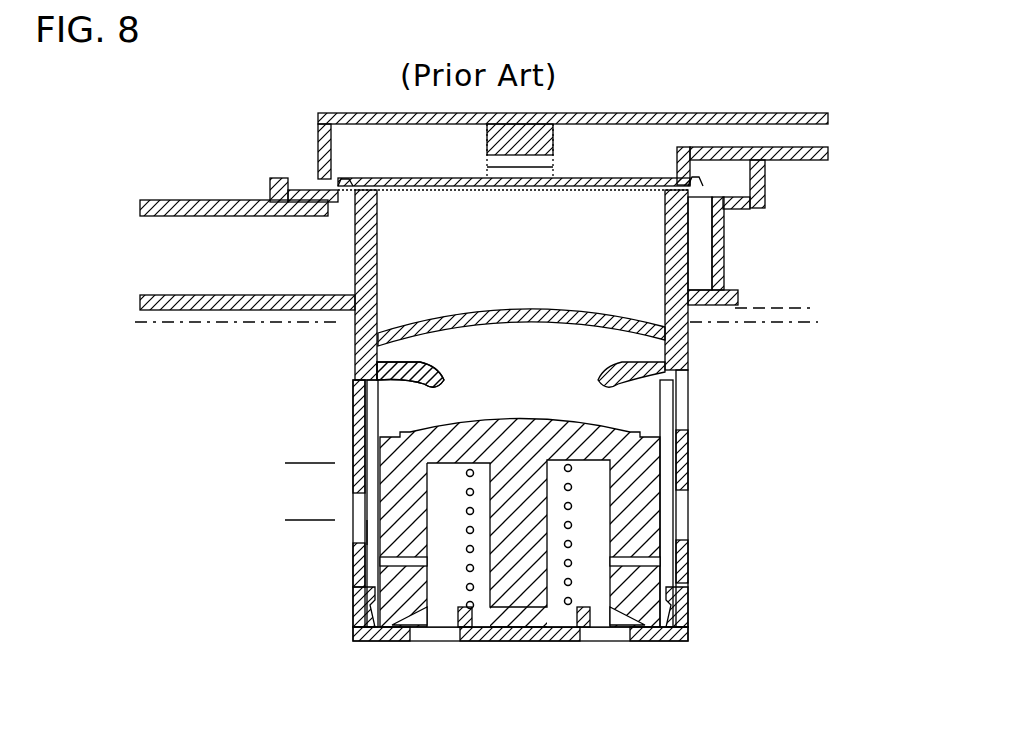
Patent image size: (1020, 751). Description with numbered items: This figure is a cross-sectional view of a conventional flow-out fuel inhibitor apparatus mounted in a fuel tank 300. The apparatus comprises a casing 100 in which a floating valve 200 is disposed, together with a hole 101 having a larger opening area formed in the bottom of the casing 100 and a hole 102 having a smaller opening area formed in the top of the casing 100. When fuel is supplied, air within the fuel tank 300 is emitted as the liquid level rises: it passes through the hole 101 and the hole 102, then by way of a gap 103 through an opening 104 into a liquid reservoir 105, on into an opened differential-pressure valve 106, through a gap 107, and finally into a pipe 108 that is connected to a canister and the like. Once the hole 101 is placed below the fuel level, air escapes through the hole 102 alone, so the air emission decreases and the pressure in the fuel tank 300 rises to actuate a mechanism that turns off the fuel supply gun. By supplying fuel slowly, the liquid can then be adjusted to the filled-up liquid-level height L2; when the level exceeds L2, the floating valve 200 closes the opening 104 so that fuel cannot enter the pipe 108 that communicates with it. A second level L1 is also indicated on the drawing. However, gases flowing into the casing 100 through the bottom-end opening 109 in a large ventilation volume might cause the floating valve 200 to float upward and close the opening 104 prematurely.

The casing 100 is at (690, 350).
The hole with a larger opening area 101 is at (688, 528).
The hole with a smaller opening area 102 is at (680, 400).
The gap 103 is at (374, 551).
The opening 104 is at (440, 382).
The liquid reservoir 105 is at (565, 281).
The differential-pressure valve 106 is at (456, 188).
The gap 107 is at (700, 230).
The pipe 108 is at (214, 200).
The bottom-end opening 109 is at (437, 643).
The floating valve 200 is at (528, 432).
The fuel tank 300 is at (787, 322).
The length L1 is at (695, 515).
The filled-up liquid-level height L2 is at (695, 457).